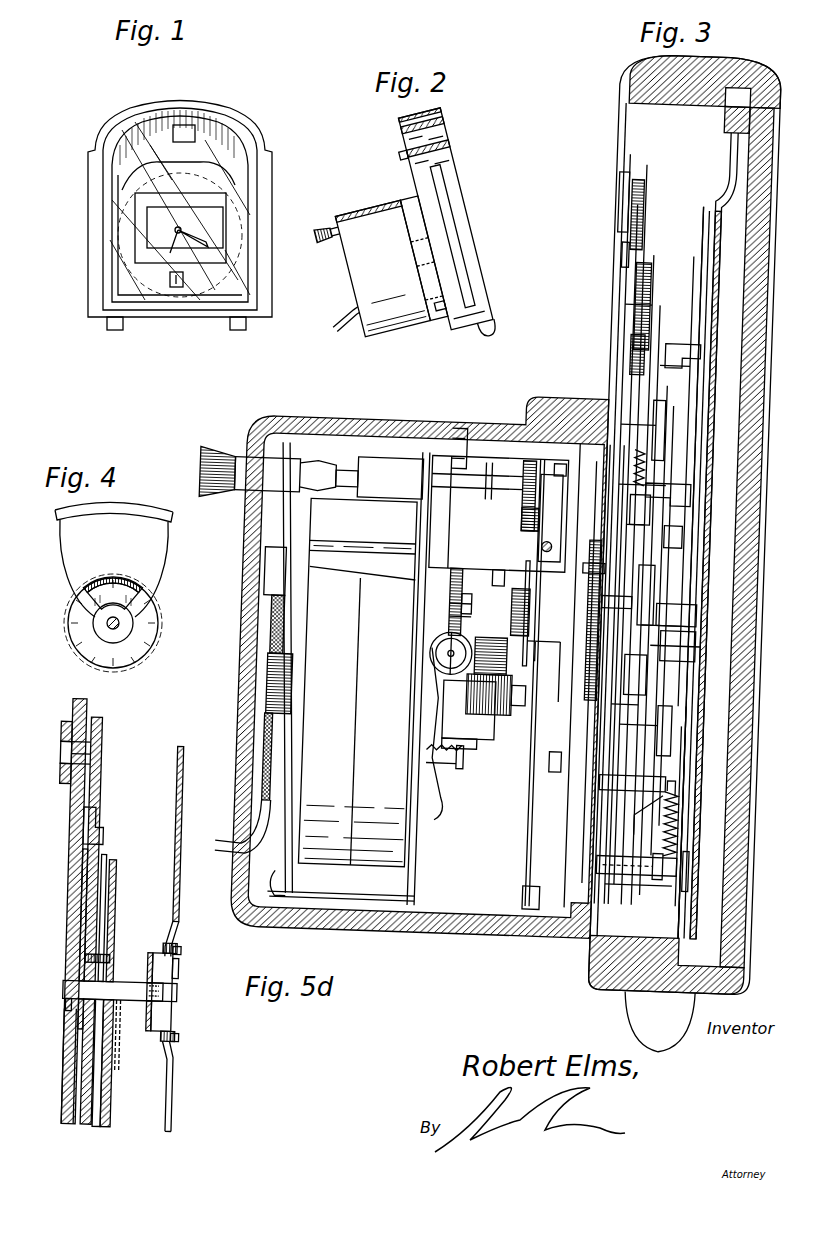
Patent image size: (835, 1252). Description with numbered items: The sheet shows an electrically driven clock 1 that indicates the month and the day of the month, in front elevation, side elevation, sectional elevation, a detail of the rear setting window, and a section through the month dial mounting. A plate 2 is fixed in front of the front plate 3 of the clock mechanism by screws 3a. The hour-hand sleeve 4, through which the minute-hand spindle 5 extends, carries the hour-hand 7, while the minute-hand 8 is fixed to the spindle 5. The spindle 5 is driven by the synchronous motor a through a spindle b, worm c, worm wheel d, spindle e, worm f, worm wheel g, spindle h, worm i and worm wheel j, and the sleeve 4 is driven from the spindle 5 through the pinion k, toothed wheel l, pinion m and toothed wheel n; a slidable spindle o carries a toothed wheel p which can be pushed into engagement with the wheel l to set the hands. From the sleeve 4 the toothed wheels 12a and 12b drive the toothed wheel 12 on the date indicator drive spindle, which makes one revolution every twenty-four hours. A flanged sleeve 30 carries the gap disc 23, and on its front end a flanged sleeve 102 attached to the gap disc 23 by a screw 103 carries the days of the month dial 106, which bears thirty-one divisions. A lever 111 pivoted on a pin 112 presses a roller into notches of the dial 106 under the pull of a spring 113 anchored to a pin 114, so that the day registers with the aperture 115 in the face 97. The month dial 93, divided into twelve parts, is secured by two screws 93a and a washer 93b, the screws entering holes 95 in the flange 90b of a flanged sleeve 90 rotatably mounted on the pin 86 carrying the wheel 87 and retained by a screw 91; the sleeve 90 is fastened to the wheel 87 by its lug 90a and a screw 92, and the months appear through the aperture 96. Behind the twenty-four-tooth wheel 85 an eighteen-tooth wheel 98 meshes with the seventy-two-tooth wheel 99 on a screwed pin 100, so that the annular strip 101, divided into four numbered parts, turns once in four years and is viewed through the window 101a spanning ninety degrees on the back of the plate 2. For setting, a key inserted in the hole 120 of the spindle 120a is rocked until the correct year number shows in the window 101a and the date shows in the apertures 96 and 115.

In FIG. 1, the electrically driven clock 1 is at (270, 203).
In FIG. 2, the electrically driven clock 1 is at (382, 268).
In FIG. 3, the electrically driven clock 1 is at (333, 434).
In FIG. 3, the plate 2 is at (624, 124).
In FIG. 3, the front plate 3 is at (568, 815).
In FIG. 3, the screws 3a is at (567, 460).
In FIG. 3, the hour-hand sleeve 4 is at (548, 640).
In FIG. 3, the minute-hand spindle 5 is at (458, 600).
In FIG. 1, the hour-hand 7 is at (135, 235).
In FIG. 3, the hour-hand 7 is at (713, 682).
In FIG. 1, the minute-hand 8 is at (210, 236).
In FIG. 3, the minute-hand 8 is at (720, 708).
In FIG. 3, the toothed wheel 12 is at (592, 702).
In FIG. 3, the toothed wheel 12a is at (598, 567).
In FIG. 3, the toothed wheel 12b is at (600, 598).
In FIG. 3, the gap disc 23 is at (662, 533).
In FIG. 3, the sleeve 30 is at (678, 345).
In FIG. 5D, the twenty-four-tooth wheel 85 is at (88, 1112).
In FIG. 5D, the pin 86 is at (80, 1000).
In FIG. 5D, the wheel 87 is at (100, 1105).
In FIG. 5D, the flanged sleeve 90 is at (151, 975).
In FIG. 5D, the lug 90a is at (108, 1065).
In FIG. 5D, the flange 90b is at (165, 945).
In FIG. 5D, the screw 91 is at (178, 1002).
In FIG. 5D, the screw 92 is at (119, 1055).
In FIG. 3, the dial 93 is at (703, 257).
In FIG. 5D, the dial 93 is at (178, 780).
In FIG. 5D, the screws 93a is at (181, 949).
In FIG. 5D, the washer 93b is at (180, 965).
In FIG. 5D, the holes 95 is at (177, 945).
In FIG. 1, the aperture 96 is at (195, 130).
In FIG. 3, the aperture 96 is at (715, 206).
In FIG. 1, the face 97 is at (237, 165).
In FIG. 3, the face 97 is at (723, 257).
In FIG. 5D, the toothed wheel 98 is at (82, 960).
In FIG. 3, the wheel 99 is at (627, 200).
In FIG. 4, the wheel 99 is at (70, 640).
In FIG. 5D, the wheel 99 is at (99, 735).
In FIG. 5D, the screwed pin 100 is at (107, 830).
In FIG. 4, the annular strip 101 is at (128, 655).
In FIG. 2, the window 101a is at (410, 148).
In FIG. 3, the window 101a is at (612, 180).
In FIG. 4, the window 101a is at (125, 584).
In FIG. 5D, the window 101a is at (88, 763).
In FIG. 3, the flanged sleeve 102 is at (678, 615).
In FIG. 3, the screw 103 is at (680, 642).
In FIG. 3, the days of the month dial 106 is at (713, 378).
In FIG. 3, the lever 111 is at (600, 872).
In FIG. 3, the pin 112 is at (545, 912).
In FIG. 3, the spring 113 is at (675, 798).
In FIG. 3, the pin 114 is at (640, 782).
In FIG. 1, the aperture 115 is at (178, 288).
In FIG. 3, the aperture 115 is at (695, 836).
In FIG. 2, the hole 120 is at (400, 205).
In FIG. 2, the spindle 120a is at (392, 218).
In FIG. 3, the synchronous motor a is at (323, 728).
In FIG. 3, the spindle b is at (448, 698).
In FIG. 3, the worm c is at (493, 727).
In FIG. 3, the worm wheel d is at (469, 711).
In FIG. 3, the spindle e is at (495, 578).
In FIG. 3, the worm f is at (503, 657).
In FIG. 3, the worm wheel g is at (447, 693).
In FIG. 3, the spindle h is at (452, 652).
In FIG. 3, the worm i is at (467, 642).
In FIG. 3, the worm wheel j is at (448, 618).
In FIG. 3, the pinion k is at (433, 648).
In FIG. 3, the toothed wheel l is at (517, 505).
In FIG. 3, the pinion m is at (503, 558).
In FIG. 3, the toothed wheel n is at (528, 640).
In FIG. 3, the spindle for setting the hands o is at (257, 482).
In FIG. 3, the toothed wheel p is at (523, 520).